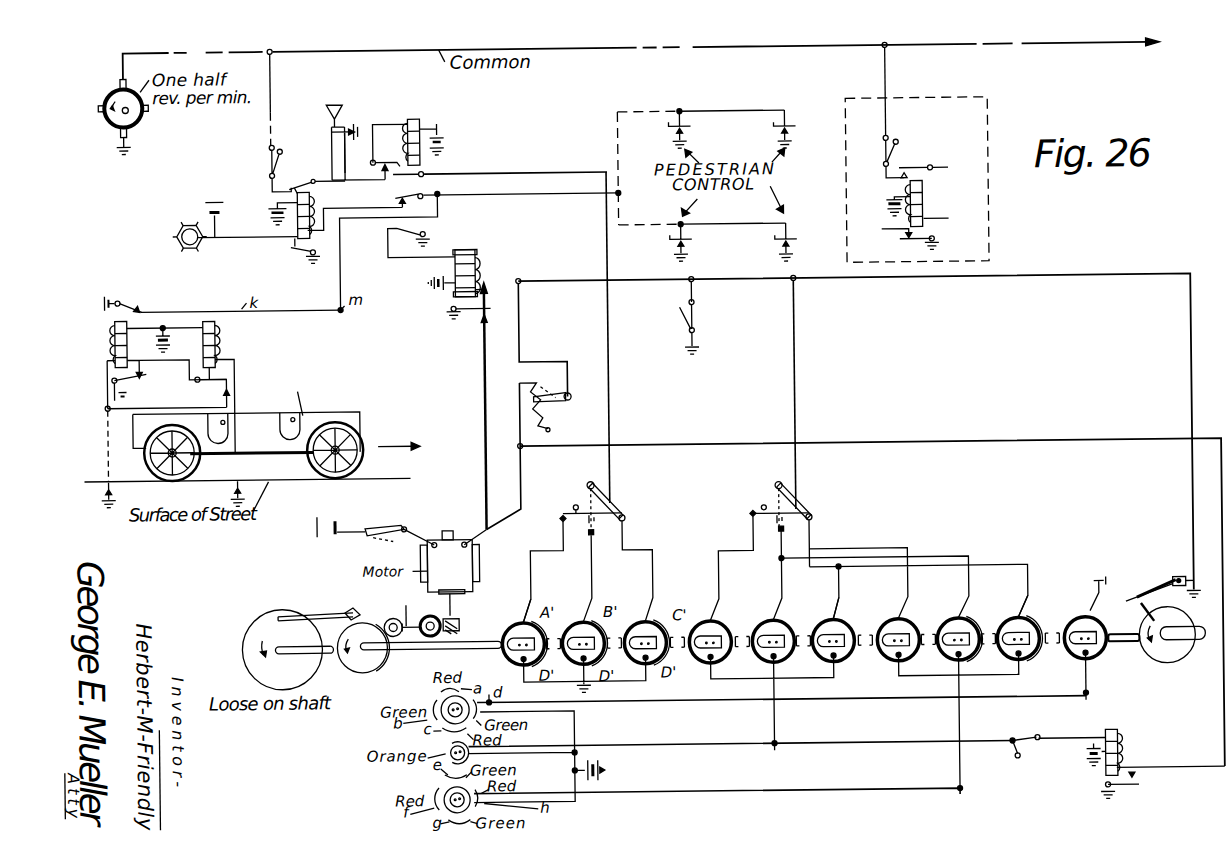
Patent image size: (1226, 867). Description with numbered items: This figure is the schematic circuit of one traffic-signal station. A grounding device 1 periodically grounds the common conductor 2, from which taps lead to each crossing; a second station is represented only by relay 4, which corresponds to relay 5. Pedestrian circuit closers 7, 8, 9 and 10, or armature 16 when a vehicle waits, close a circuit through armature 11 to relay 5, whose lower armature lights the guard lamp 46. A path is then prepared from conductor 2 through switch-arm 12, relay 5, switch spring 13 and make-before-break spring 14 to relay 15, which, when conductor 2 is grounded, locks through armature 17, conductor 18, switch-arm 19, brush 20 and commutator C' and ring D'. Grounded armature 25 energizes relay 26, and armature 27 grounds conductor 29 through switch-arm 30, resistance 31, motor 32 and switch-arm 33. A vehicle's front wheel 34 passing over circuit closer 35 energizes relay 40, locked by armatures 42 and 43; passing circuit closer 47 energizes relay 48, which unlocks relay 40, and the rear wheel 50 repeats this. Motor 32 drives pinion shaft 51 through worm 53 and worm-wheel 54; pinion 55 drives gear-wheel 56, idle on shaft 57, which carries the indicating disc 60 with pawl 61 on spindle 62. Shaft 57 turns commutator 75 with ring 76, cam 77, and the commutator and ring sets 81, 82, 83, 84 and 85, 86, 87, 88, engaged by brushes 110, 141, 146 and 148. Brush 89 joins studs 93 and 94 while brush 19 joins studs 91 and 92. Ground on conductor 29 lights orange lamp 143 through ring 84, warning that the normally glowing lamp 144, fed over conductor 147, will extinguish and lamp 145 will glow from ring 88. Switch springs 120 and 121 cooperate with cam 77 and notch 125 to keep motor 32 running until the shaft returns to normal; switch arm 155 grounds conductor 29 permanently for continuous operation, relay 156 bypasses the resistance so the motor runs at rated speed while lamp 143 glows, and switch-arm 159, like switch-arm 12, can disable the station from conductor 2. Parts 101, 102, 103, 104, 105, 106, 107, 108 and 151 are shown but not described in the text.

The grounding device 1 is at (140, 112).
The common conductor 2 is at (766, 50).
The relay 4 is at (927, 204).
The relay 5 is at (311, 197).
The circuit closer 7 is at (692, 241).
The circuit closer 8 is at (797, 241).
The circuit closer 9 is at (798, 127).
The circuit closer 10 is at (693, 127).
The armature 11 is at (419, 195).
The switch-arm 12 is at (271, 156).
The switch spring 13 is at (354, 153).
The make-before-break spring 14 is at (385, 155).
The relay 15 is at (424, 121).
The armature 16 is at (129, 302).
The armature 17 is at (431, 174).
The conductor 18 is at (611, 374).
The brush 19 is at (618, 508).
The brush 20 is at (652, 600).
The armature 25 is at (429, 231).
The relay 26 is at (478, 263).
The armature 27 is at (479, 309).
The conductor 29 is at (840, 281).
The switch-arm 30 is at (559, 405).
The resistance 31 is at (530, 395).
The motor 32 is at (452, 538).
The switch-arm 33 is at (374, 526).
The front wheel 34 is at (363, 441).
The circuit closer 35 is at (110, 478).
The relay 40 is at (112, 343).
The armature 42 is at (139, 378).
The armature 43 is at (212, 377).
The lamp 46 is at (185, 228).
The circuit closer 47 is at (240, 478).
The relay 48 is at (216, 342).
The rear wheel 50 is at (196, 462).
The pinion shaft 51 is at (415, 608).
The worm 53 is at (458, 622).
The worm-wheel 54 is at (429, 613).
The pinion 55 is at (400, 619).
The gear-wheel 56 is at (321, 688).
The shaft 57 is at (1200, 657).
The front face indicating disc 60 is at (288, 649).
The pawl 61 is at (352, 609).
The spindle 62 is at (312, 613).
The commutator 75 is at (1092, 619).
The ring 76 is at (1087, 665).
The cam 77 is at (1167, 634).
The commutator 81 is at (716, 621).
The commutator 82 is at (785, 614).
The commutator 83 is at (845, 615).
The ring 84 is at (834, 664).
The commutator 85 is at (903, 619).
The commutator 86 is at (964, 619).
The commutator 87 is at (1024, 618).
The ring 88 is at (1019, 663).
The brush 89 is at (805, 509).
The contact stud 91 is at (613, 497).
The contact stud 92 is at (625, 518).
The contact stud 93 is at (798, 498).
The contact stud 94 is at (813, 518).
The contact 101 is at (593, 521).
The contact 102 is at (593, 536).
The contact 103 is at (783, 520).
The contact 104 is at (781, 537).
The contact 105 is at (586, 485).
The contact 106 is at (566, 508).
The contact 107 is at (775, 488).
The contact 108 is at (752, 512).
The brush 110 is at (526, 603).
The switch spring 120 is at (1167, 583).
The switch spring 121 is at (1135, 600).
The notch 125 is at (1188, 636).
The brush 141 is at (836, 597).
The orange colored lamp 143 is at (444, 745).
The lamp 144 is at (436, 689).
The lamp 145 is at (440, 790).
The brush 146 is at (1093, 590).
The conductor 147 is at (652, 702).
The brush 148 is at (1022, 596).
The horn 151 is at (347, 112).
The switch arm 155 is at (684, 318).
The relay 156 is at (1114, 757).
The switch-arm 159 is at (885, 148).